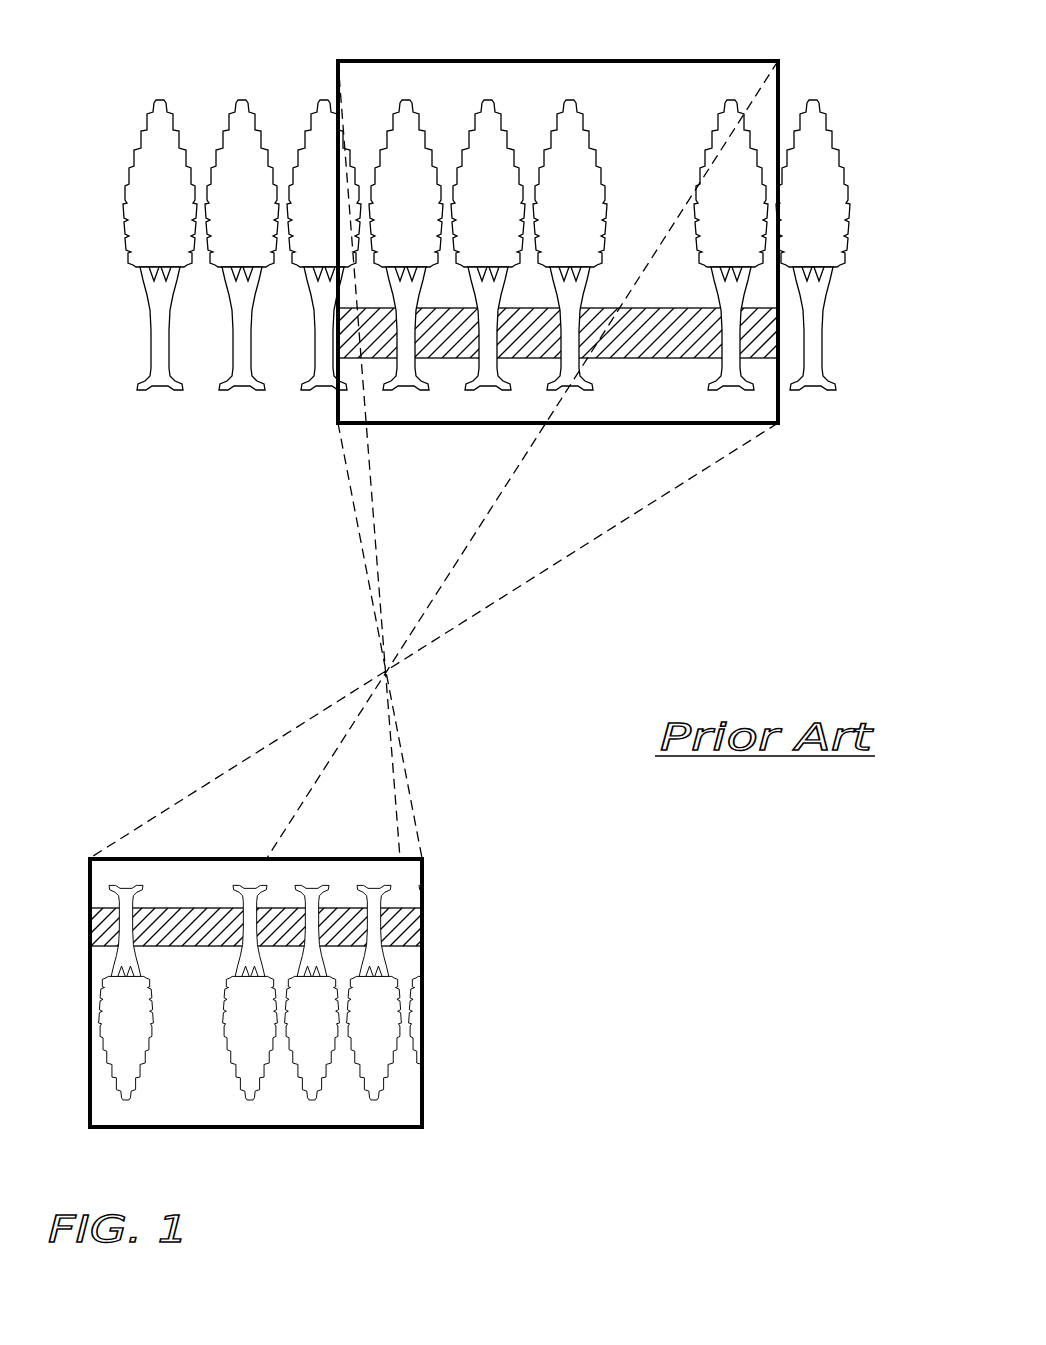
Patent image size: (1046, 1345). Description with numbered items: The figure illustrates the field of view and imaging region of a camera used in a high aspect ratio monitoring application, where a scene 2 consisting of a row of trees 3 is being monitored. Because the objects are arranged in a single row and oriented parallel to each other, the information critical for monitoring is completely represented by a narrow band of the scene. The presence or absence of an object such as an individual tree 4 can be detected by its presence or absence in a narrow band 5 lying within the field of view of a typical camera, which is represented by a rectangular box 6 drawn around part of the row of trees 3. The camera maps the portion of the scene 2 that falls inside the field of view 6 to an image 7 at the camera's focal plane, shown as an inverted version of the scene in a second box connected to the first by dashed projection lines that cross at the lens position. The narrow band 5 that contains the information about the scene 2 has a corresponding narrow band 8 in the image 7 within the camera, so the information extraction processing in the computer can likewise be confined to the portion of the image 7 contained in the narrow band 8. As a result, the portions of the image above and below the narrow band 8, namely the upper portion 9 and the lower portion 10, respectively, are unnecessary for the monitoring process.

The scene 2 is at (318, 58).
The row of trees 3 is at (116, 289).
The individual tree 4 is at (568, 158).
The narrow band 5 is at (770, 338).
The rectangular box 6 is at (782, 405).
The image 7 is at (233, 860).
The narrow band of the image 8 is at (423, 918).
The portion of the image above the narrow band 9 is at (405, 870).
The portion of the image below the narrow band 10 is at (405, 1090).